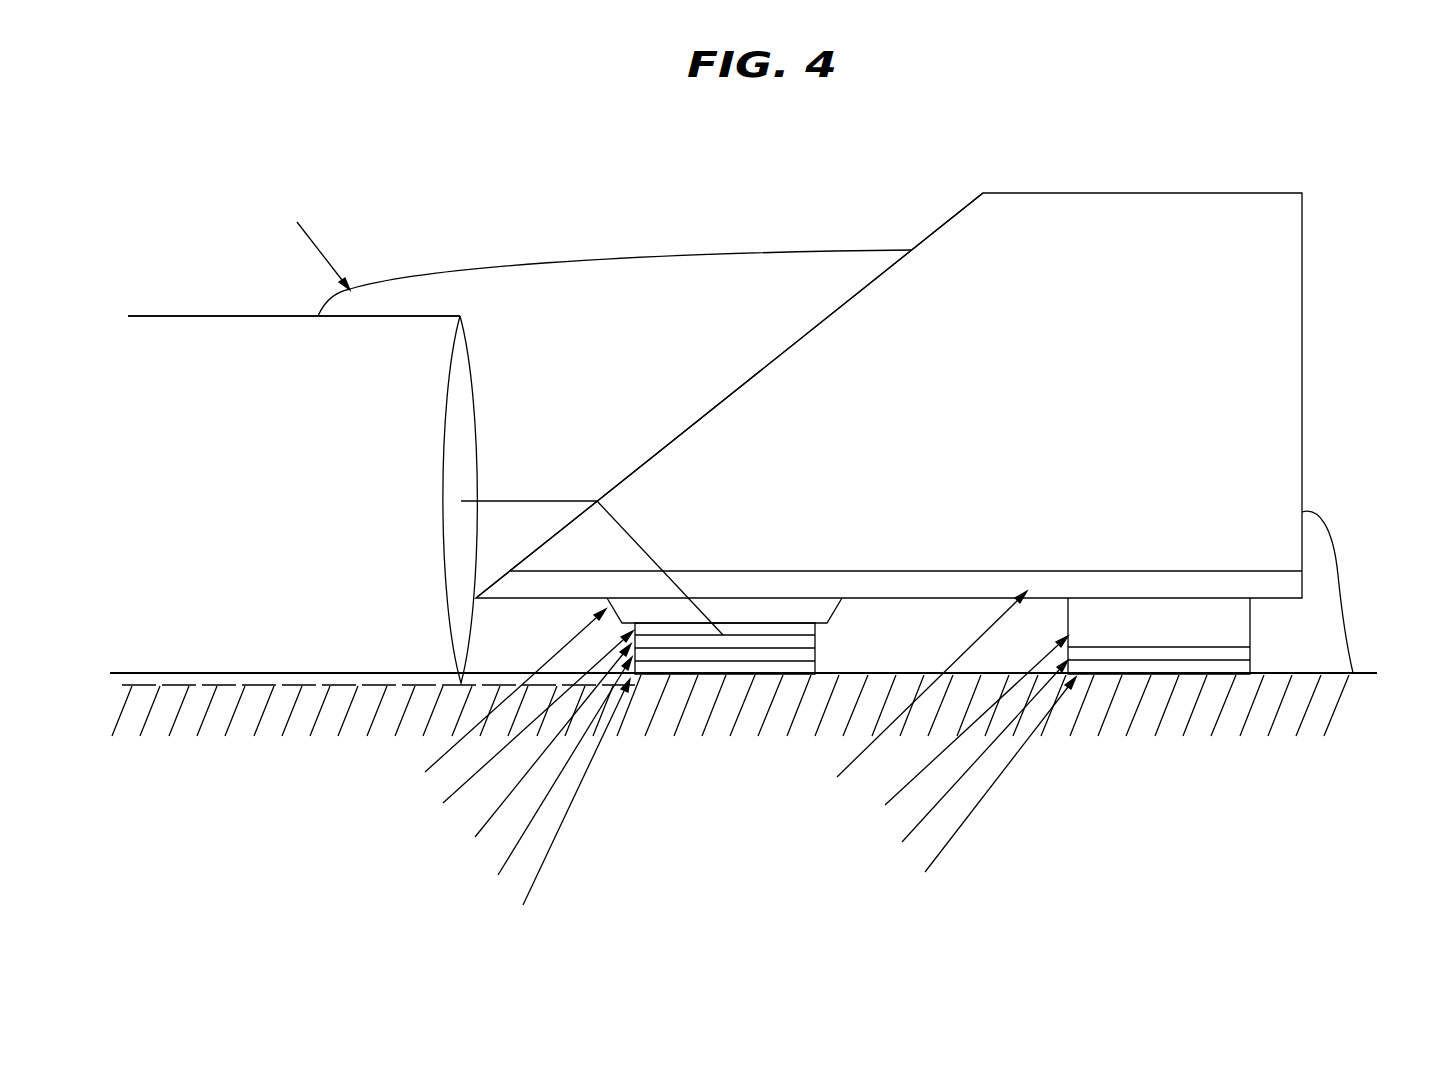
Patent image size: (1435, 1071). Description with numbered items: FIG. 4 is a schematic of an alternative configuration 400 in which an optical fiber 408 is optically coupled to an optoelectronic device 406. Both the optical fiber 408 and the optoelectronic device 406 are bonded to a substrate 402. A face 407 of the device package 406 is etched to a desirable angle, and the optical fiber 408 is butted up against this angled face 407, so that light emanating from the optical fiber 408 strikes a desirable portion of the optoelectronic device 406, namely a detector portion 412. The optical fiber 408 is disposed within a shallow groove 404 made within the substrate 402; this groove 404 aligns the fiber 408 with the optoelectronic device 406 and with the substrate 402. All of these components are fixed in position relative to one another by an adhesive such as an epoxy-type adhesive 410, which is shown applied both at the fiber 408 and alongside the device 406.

The optical receiver assembly 400 is at (803, 129).
The substrate 402 is at (228, 729).
The shallow groove 404 is at (587, 688).
The optoelectronic device 406 is at (1302, 372).
The face 407 is at (938, 214).
The optical fiber 408 is at (193, 333).
The epoxy-type adhesive 410 is at (610, 272).
The detector portion 412 is at (847, 603).